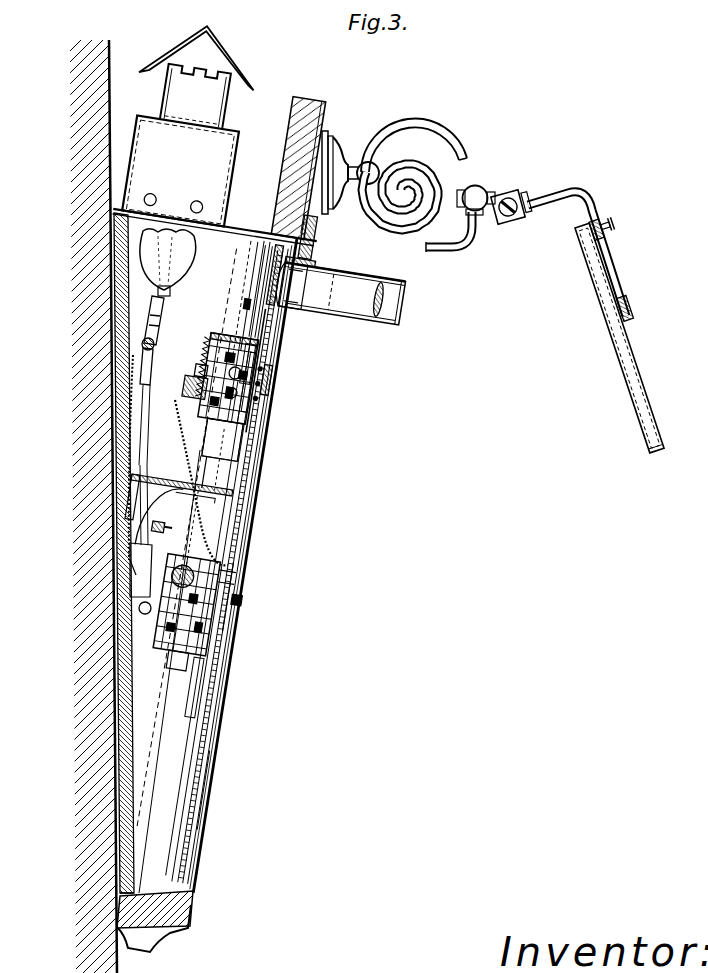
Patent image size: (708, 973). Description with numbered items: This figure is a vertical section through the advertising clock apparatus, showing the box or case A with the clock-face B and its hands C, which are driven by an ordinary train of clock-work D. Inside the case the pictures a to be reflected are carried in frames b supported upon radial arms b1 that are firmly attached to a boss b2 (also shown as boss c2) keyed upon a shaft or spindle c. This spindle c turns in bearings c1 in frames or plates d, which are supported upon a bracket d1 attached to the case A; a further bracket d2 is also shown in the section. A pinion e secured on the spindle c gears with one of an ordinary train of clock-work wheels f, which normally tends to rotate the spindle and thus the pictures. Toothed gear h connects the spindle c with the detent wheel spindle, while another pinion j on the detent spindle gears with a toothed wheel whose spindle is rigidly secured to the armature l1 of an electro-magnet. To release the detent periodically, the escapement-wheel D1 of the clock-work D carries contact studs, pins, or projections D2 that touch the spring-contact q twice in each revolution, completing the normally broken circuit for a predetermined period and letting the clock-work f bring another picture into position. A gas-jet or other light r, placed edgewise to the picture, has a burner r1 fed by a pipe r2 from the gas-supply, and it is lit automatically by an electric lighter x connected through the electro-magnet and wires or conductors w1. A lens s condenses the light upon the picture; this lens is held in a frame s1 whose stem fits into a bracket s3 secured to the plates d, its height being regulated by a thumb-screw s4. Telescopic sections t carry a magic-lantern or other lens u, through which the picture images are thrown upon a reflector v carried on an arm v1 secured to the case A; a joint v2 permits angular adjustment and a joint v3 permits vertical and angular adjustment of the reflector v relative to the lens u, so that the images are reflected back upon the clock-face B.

The box or case A is at (142, 506).
The clock-face B is at (257, 528).
The hands C is at (265, 462).
The pictures a is at (258, 474).
The frames b is at (252, 487).
The magic-lantern or other lens u is at (381, 299).
The telescopic sections t is at (318, 263).
The lens s is at (268, 262).
The frame s1 is at (262, 290).
The bracket s3 is at (260, 323).
The thumb-screw s4 is at (250, 313).
The pinion e is at (223, 413).
The pinion j is at (208, 346).
The frames or plates d is at (206, 356).
The armature l1 is at (205, 369).
The boss c2 is at (196, 385).
The toothed gear h is at (262, 368).
The bearings c1 is at (263, 380).
The radial arms b1 is at (270, 335).
The boss b2 is at (280, 373).
The shaft or spindle c is at (204, 798).
The train of clock-work wheels f is at (202, 446).
The gas-jet or other suitable light r is at (168, 259).
The electric lighter x is at (168, 289).
The burner r1 is at (164, 297).
The electro-magnet / wires or conductors w1 is at (172, 395).
The pipe r2 is at (176, 410).
The bracket d2 is at (178, 480).
The bracket d1 is at (178, 505).
The escapement-wheel D1 is at (206, 482).
The train of clock-work D is at (185, 671).
The contact studs, pins, or projections D2 is at (236, 577).
The spring-contact q is at (236, 600).
The arm v1 is at (440, 126).
The joint v2 is at (509, 196).
The reflector v is at (601, 322).
The joint v3 is at (604, 236).